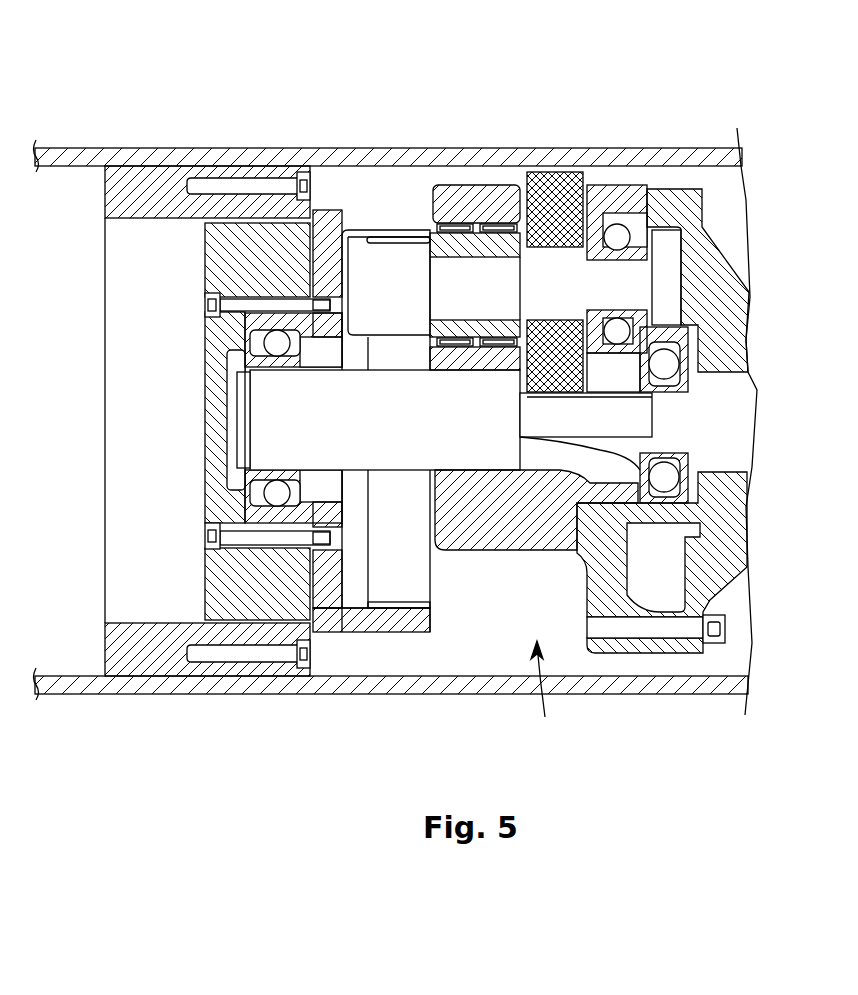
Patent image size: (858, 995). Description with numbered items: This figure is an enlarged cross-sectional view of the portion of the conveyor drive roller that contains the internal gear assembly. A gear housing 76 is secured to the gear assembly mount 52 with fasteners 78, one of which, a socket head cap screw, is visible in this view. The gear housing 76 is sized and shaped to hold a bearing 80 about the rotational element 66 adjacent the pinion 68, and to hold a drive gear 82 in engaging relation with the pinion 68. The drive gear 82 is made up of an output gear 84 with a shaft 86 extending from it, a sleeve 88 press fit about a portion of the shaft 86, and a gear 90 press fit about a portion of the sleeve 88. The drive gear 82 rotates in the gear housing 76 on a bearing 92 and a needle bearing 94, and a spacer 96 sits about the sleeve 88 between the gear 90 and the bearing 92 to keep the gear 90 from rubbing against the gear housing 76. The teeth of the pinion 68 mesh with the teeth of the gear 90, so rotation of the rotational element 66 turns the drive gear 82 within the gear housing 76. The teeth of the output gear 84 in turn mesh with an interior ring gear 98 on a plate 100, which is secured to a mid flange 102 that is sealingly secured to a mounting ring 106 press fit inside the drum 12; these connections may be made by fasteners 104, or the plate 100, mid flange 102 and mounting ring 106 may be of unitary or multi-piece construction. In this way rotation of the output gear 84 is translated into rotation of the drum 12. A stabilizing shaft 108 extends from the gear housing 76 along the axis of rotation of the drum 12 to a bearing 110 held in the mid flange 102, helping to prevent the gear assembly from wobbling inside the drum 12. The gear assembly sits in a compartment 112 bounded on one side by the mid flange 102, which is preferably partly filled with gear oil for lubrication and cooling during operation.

The drum 12 is at (642, 148).
The gear assembly mount 52 is at (703, 212).
The rotational element 66 is at (743, 404).
The pinion 68 is at (550, 440).
The gear housing 76 is at (562, 556).
The fasteners 78 is at (718, 626).
The bearing 80 is at (743, 522).
The drive gear 82 is at (491, 196).
The output gear 84 is at (400, 263).
The shaft 86 is at (477, 267).
The sleeve 88 is at (497, 240).
The gear 90 is at (562, 175).
The bearing 92 is at (645, 227).
The needle bearing 94 is at (450, 213).
The spacer 96 is at (604, 238).
The interior ring gear 98 is at (364, 229).
The plate 100 is at (327, 217).
The mid flange 102 is at (221, 228).
The fasteners 104 is at (300, 175).
The mounting ring 106 is at (132, 182).
The stabilizing shaft 108 is at (400, 433).
The bearing 110 is at (205, 335).
The compartment 112 is at (550, 692).